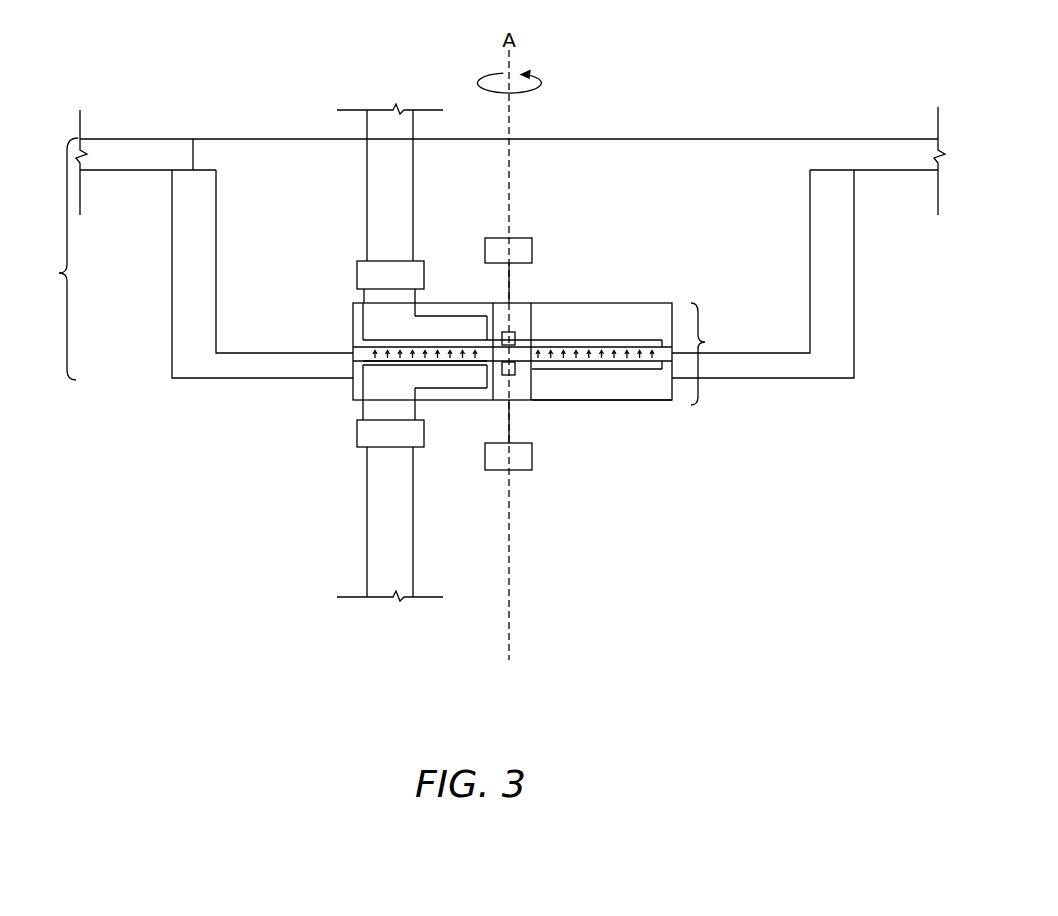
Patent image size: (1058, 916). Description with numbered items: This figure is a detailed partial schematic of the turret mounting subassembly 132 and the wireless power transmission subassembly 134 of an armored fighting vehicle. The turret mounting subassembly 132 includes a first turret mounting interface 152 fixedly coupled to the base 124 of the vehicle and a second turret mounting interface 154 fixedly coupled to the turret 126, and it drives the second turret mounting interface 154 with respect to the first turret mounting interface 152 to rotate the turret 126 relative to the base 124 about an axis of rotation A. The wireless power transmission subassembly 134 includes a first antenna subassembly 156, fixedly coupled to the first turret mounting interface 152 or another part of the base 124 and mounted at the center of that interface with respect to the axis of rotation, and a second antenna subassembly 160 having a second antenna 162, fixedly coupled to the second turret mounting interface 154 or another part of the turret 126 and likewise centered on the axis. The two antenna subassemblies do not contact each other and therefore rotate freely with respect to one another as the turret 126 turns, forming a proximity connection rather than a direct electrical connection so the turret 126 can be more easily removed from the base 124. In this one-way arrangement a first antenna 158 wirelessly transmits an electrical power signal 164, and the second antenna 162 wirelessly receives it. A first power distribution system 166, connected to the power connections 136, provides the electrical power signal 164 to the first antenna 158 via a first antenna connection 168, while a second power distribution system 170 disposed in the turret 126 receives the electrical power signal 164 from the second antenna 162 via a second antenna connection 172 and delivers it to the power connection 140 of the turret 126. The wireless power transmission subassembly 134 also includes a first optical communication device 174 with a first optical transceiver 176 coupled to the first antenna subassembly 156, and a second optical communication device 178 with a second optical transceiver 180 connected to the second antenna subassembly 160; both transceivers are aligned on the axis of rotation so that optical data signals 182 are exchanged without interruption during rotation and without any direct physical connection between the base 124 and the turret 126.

The base 124 is at (106, 226).
The turret 126 is at (239, 121).
The turret mounting subassembly 132 is at (53, 259).
The wireless power transmission subassembly 134 is at (763, 287).
The power connections 136 is at (367, 491).
The power connection 140 is at (367, 188).
The first turret mounting interface 152 is at (172, 292).
The second turret mounting interface 154 is at (226, 160).
The first antenna subassembly 156 is at (637, 400).
The first antenna 158 is at (612, 370).
The second antenna subassembly 160 is at (353, 318).
The second antenna 162 is at (360, 352).
The electrical power signal 164 is at (378, 354).
The first power distribution system 166 is at (357, 434).
The first antenna connection 168 is at (417, 413).
The second power distribution system 170 is at (357, 272).
The second antenna connection 172 is at (365, 298).
The first optical communication device 174 is at (532, 458).
The first optical transceiver 176 is at (517, 368).
The second optical communication device 178 is at (532, 250).
The second optical transceiver 180 is at (515, 337).
The optical data signals 182 is at (504, 352).